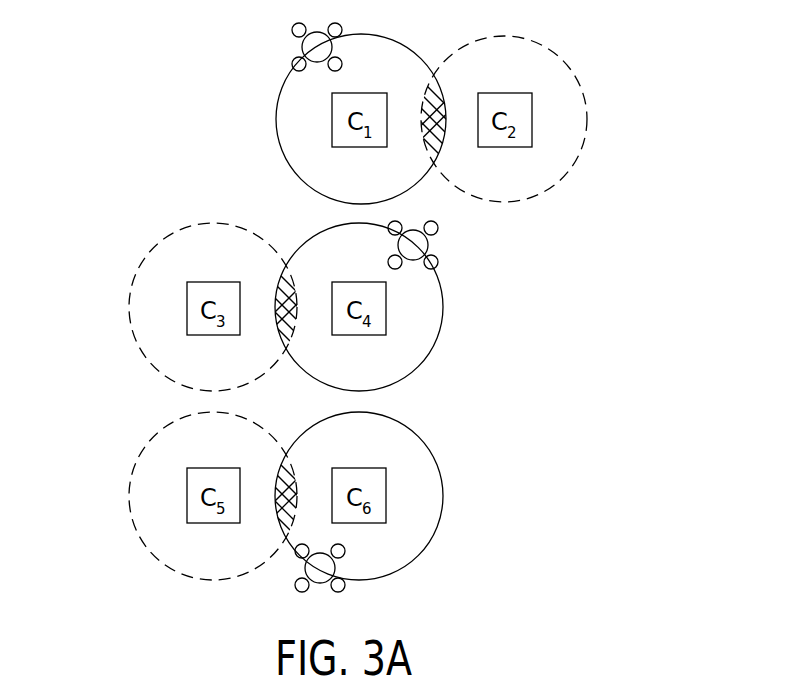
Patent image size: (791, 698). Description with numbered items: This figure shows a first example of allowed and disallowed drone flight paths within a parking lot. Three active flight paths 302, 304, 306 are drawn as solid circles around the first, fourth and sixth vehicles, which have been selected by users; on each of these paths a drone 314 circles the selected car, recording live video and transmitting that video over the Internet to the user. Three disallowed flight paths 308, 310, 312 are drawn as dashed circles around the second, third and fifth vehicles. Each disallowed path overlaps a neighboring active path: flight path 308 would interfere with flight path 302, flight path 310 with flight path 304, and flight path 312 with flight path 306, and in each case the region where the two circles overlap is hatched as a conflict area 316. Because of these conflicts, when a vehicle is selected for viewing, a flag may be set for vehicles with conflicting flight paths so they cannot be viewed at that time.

The active flight path 302 is at (277, 137).
The active flight path 304 is at (443, 308).
The active flight path 306 is at (445, 496).
The disallowed flight path 308 is at (586, 97).
The disallowed flight path 310 is at (128, 307).
The disallowed flight path 312 is at (128, 497).
The drone 314 is at (293, 59).
The conflict area 316 is at (436, 70).